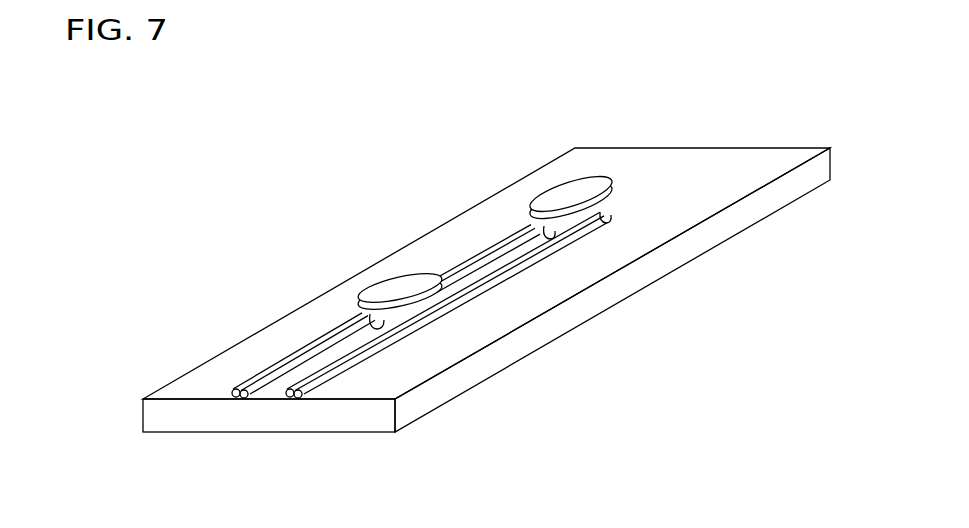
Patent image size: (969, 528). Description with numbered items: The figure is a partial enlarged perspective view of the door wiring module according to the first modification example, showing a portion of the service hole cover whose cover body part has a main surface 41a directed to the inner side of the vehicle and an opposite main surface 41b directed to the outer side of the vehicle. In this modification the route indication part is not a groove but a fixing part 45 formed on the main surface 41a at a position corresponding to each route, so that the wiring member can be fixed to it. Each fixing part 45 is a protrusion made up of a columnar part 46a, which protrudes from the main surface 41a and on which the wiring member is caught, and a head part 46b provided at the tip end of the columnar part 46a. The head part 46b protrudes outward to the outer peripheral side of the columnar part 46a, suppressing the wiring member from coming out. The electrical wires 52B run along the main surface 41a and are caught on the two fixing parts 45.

The main surface 41a is at (433, 360).
The main surface 41b is at (303, 432).
The fixing part 45 is at (410, 242).
The columnar part 46a is at (345, 322).
The head part 46b is at (390, 293).
The electrical wire 52B is at (288, 371).